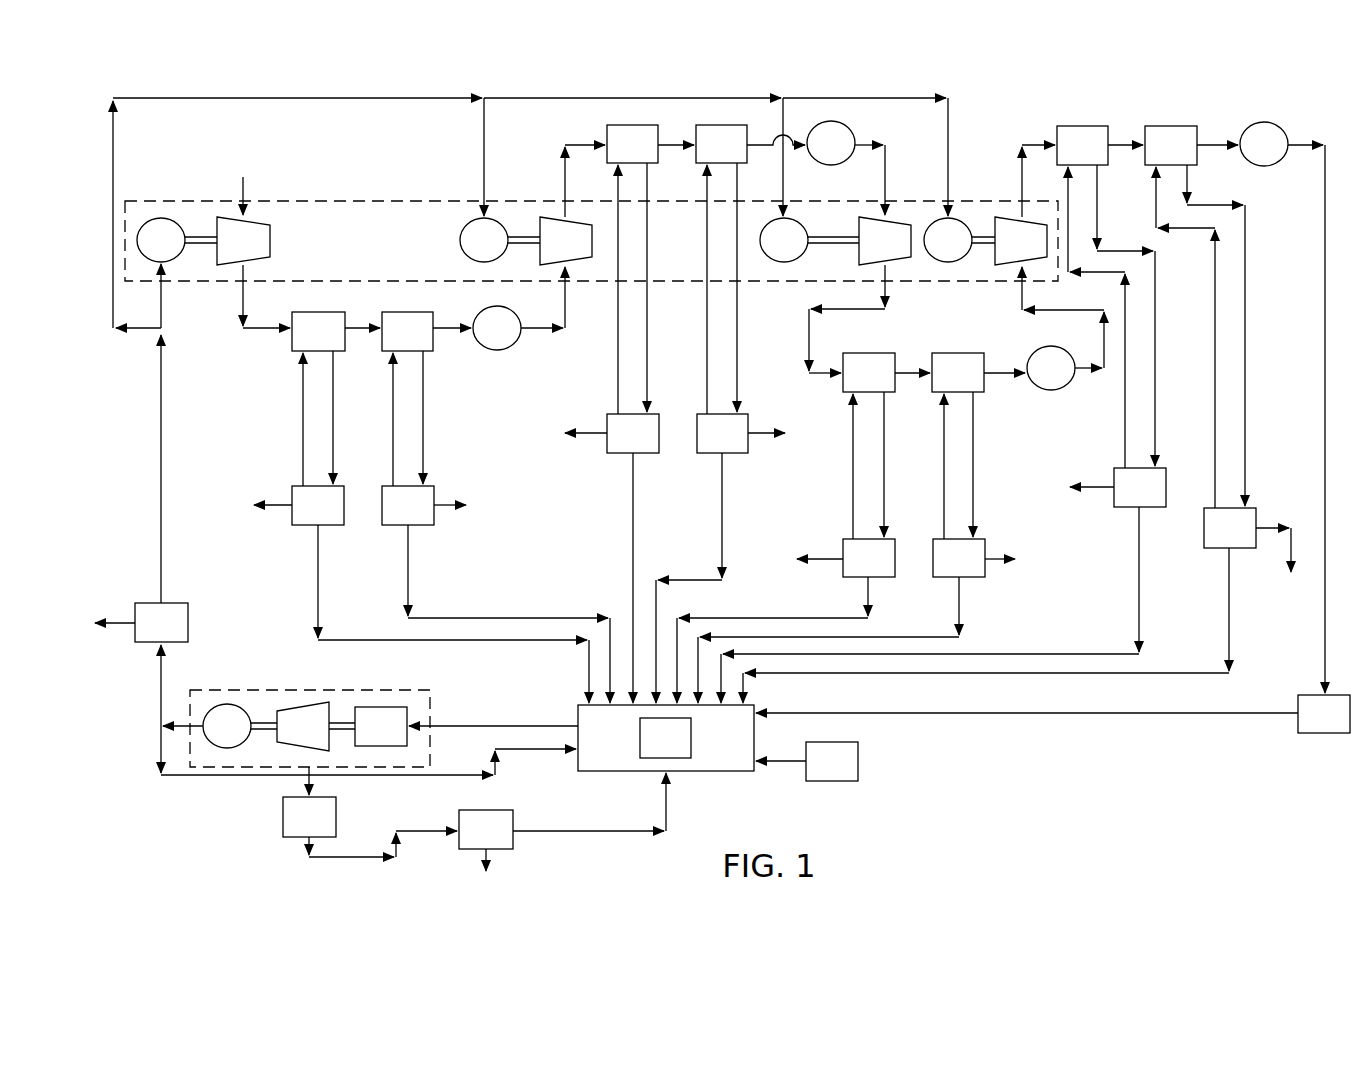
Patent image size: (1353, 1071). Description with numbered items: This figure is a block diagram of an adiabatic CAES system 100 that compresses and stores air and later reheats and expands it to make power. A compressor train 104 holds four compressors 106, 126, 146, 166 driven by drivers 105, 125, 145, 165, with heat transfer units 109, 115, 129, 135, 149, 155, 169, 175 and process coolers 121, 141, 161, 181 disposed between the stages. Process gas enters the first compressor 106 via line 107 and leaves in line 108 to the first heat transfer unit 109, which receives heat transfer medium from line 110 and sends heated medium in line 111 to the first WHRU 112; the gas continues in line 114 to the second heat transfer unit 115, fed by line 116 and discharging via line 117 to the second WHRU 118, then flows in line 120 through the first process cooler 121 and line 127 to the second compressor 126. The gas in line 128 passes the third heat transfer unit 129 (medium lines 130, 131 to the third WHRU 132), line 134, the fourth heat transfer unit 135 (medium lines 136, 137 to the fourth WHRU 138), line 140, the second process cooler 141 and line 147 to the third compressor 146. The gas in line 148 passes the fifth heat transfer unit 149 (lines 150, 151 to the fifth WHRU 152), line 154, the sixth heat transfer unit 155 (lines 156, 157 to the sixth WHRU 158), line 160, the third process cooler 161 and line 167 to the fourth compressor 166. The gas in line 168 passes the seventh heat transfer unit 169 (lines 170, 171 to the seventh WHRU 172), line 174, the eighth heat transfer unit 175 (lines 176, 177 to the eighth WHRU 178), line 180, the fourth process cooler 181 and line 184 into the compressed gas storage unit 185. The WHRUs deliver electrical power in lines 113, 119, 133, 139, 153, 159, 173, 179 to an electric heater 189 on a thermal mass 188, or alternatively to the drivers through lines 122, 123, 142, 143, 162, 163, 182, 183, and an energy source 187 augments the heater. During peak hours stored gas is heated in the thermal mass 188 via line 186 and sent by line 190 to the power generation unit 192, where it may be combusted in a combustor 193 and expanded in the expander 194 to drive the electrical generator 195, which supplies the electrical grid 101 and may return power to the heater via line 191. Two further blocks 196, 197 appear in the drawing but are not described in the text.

The adiabatic CAES system 100 is at (722, 500).
The electrical grid 101 is at (149, 629).
The compressor train 104 is at (372, 200).
The first driver 105 is at (149, 251).
The first compressor 106 is at (231, 249).
The line 107 is at (245, 180).
The line 108 is at (270, 326).
The first heat transfer unit 109 is at (306, 338).
The line 110 is at (303, 390).
The line 111 is at (333, 390).
The first waste heat recovery unit 112 is at (306, 512).
The line 113 is at (318, 577).
The line 114 is at (354, 326).
The second heat transfer unit 115 is at (395, 338).
The line 116 is at (393, 426).
The line 117 is at (423, 426).
The second waste heat recovery unit 118 is at (396, 512).
The line 119 is at (408, 577).
The line 120 is at (449, 326).
The first process cooler 121 is at (485, 339).
The line 122 is at (275, 502).
The line 123 is at (445, 502).
The second driver 125 is at (472, 251).
The second compressor 126 is at (554, 249).
The line 127 is at (531, 326).
The line 128 is at (565, 155).
The third heat transfer unit 129 is at (620, 151).
The line 130 is at (618, 358).
The line 131 is at (647, 358).
The third waste heat recovery unit 132 is at (621, 440).
The line 133 is at (633, 478).
The line 134 is at (669, 148).
The fourth heat transfer unit 135 is at (709, 151).
The line 136 is at (707, 302).
The line 137 is at (737, 302).
The fourth waste heat recovery unit 138 is at (710, 440).
The line 139 is at (722, 478).
The line 140 is at (764, 148).
The second process cooler 141 is at (819, 154).
The line 142 is at (589, 430).
The line 143 is at (761, 430).
The third driver 145 is at (772, 251).
The third compressor 146 is at (873, 249).
The line 147 is at (885, 180).
The line 148 is at (809, 336).
The fifth heat transfer unit 149 is at (857, 379).
The line 150 is at (853, 478).
The line 151 is at (884, 478).
The fifth waste heat recovery unit 152 is at (857, 565).
The line 153 is at (868, 594).
The line 154 is at (884, 395).
The sixth heat transfer unit 155 is at (946, 379).
The line 156 is at (944, 444).
The line 157 is at (973, 444).
The sixth waste heat recovery unit 158 is at (947, 565).
The line 159 is at (959, 604).
The line 160 is at (978, 395).
The third process cooler 161 is at (1039, 379).
The line 162 is at (825, 553).
The line 163 is at (997, 553).
The fourth driver 165 is at (936, 251).
The fourth compressor 166 is at (1009, 249).
The line 167 is at (1104, 336).
The line 168 is at (1021, 165).
The seventh heat transfer unit 169 is at (1070, 152).
The line 170 is at (1125, 401).
The line 171 is at (1155, 336).
The seventh waste heat recovery unit 172 is at (1128, 494).
The line 173 is at (1139, 599).
The line 174 is at (1120, 148).
The eighth heat transfer unit 175 is at (1159, 152).
The line 176 is at (1215, 411).
The line 177 is at (1245, 411).
The eighth waste heat recovery unit 178 is at (1218, 535).
The line 179 is at (1229, 576).
The line 180 is at (1214, 148).
The fourth process cooler 181 is at (1252, 155).
The line 182 is at (1095, 485).
The line 183 is at (1266, 523).
The line 184 is at (1325, 299).
The compressed gas storage unit 185 is at (1312, 721).
The line 186 is at (1175, 714).
The energy source 187 is at (820, 768).
The thermal mass 188 is at (614, 772).
The electric heater 189 is at (654, 745).
The line 190 is at (459, 726).
The line 191 is at (412, 777).
The power generation unit 192 is at (237, 690).
The combustor 193 is at (369, 733).
The expander 194 is at (291, 736).
The electrical generator 195 is at (215, 737).
The condenser 196 is at (298, 824).
The distribution unit 197 is at (474, 836).